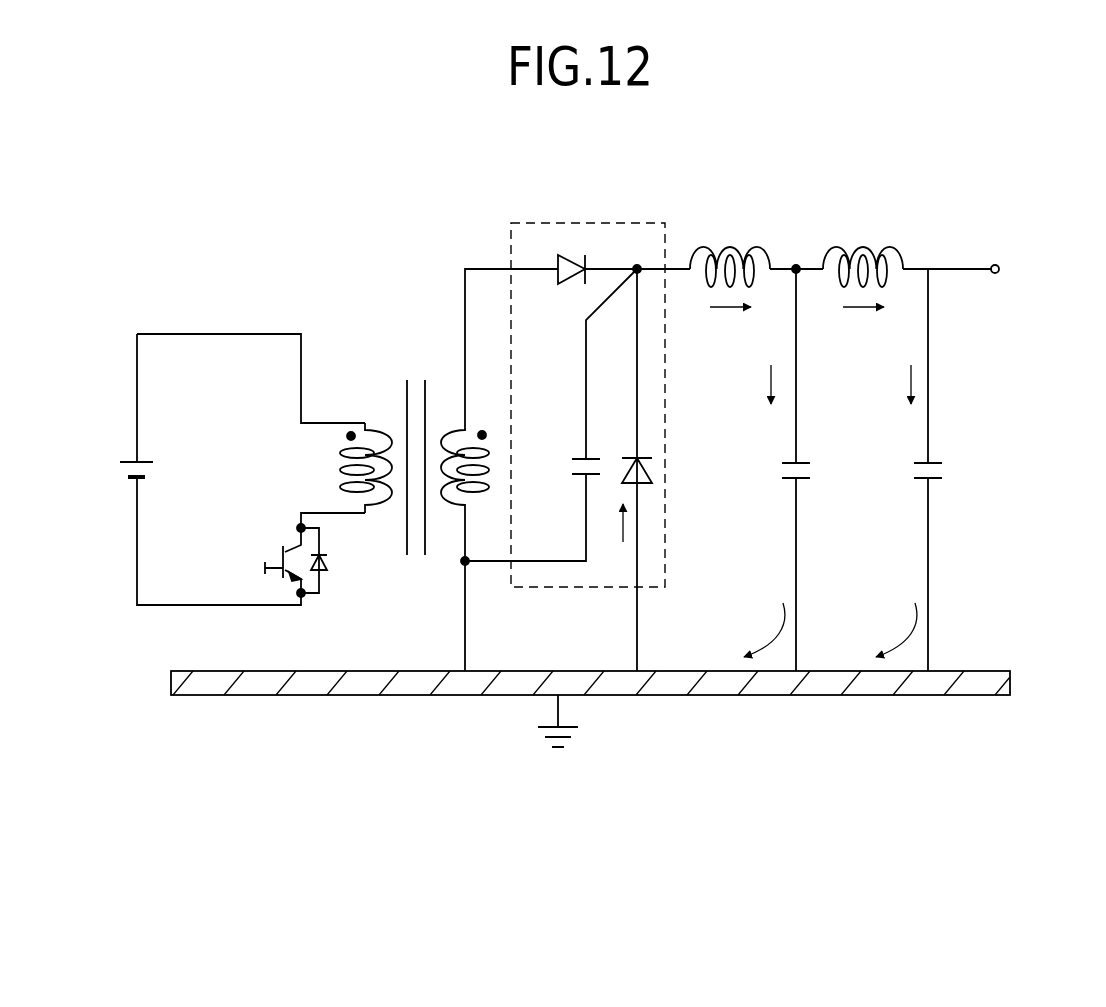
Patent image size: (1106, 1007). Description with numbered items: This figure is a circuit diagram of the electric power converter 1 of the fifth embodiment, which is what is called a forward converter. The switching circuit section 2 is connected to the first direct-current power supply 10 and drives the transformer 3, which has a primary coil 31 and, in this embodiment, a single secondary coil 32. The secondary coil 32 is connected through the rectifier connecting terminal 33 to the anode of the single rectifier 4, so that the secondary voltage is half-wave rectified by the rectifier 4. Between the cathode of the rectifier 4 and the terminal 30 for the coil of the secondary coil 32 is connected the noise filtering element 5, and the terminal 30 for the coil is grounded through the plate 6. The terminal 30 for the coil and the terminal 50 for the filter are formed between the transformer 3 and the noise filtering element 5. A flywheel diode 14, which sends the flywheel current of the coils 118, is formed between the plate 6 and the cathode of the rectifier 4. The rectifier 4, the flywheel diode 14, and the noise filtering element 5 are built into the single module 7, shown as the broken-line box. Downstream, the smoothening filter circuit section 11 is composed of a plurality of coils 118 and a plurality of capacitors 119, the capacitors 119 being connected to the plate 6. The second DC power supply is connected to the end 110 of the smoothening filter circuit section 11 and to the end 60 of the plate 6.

The electric power converter 1 is at (975, 170).
The switching circuit section 2 is at (214, 408).
The transformer 3 is at (413, 376).
The rectifier 4 is at (578, 258).
The noise filtering element 5 is at (593, 478).
The plate 6 is at (368, 680).
The single module 7 is at (620, 465).
The first direct-current power supply 10 is at (128, 462).
The smoothening filter circuit section 11 is at (889, 402).
The flywheel diode 14 is at (647, 483).
The terminal for the coil 30 is at (465, 563).
The primary coil 31 is at (386, 423).
The secondary coil 32 is at (445, 427).
The rectifier connecting terminal 33 is at (478, 268).
The terminal for the filter 50 is at (485, 562).
The end of the plate 60 is at (983, 684).
The end of the smoothening filter circuit section 110 is at (998, 265).
The coil 118 is at (867, 247).
The capacitor 119 is at (932, 461).